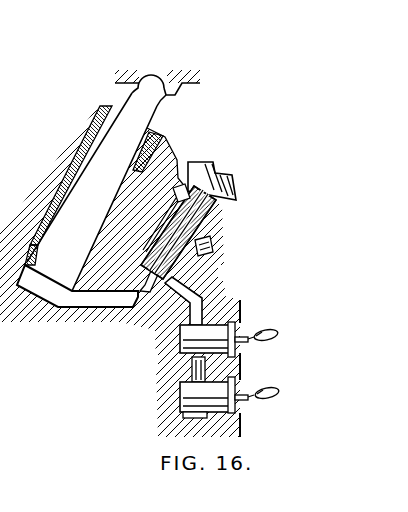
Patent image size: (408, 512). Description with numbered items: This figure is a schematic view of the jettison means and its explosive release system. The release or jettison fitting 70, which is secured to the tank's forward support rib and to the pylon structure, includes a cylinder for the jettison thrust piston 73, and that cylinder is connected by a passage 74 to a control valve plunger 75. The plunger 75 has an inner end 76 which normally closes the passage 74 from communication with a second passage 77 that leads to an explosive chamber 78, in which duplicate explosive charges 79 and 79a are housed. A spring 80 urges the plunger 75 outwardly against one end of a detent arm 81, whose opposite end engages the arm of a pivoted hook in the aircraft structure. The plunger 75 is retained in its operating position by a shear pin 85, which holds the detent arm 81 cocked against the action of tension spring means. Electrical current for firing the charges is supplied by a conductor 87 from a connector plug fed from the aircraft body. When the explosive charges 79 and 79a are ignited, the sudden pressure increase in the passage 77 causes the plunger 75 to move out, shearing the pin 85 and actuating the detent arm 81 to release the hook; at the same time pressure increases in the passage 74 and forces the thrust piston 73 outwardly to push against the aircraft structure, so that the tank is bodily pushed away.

The release or jettison fitting 70 is at (42, 205).
The jettison thrust piston 73 is at (118, 180).
The passage 74 is at (90, 300).
The control valve plunger 75 is at (157, 231).
The inner end 76 is at (140, 298).
The passage 77 is at (206, 284).
The explosive chamber 78 is at (190, 418).
The explosive charge 79 is at (178, 344).
The explosive charge 79a is at (182, 398).
The spring 80 is at (213, 218).
The detent arm 81 is at (232, 186).
The shear pin 85 is at (212, 247).
The conductor 87 is at (278, 388).